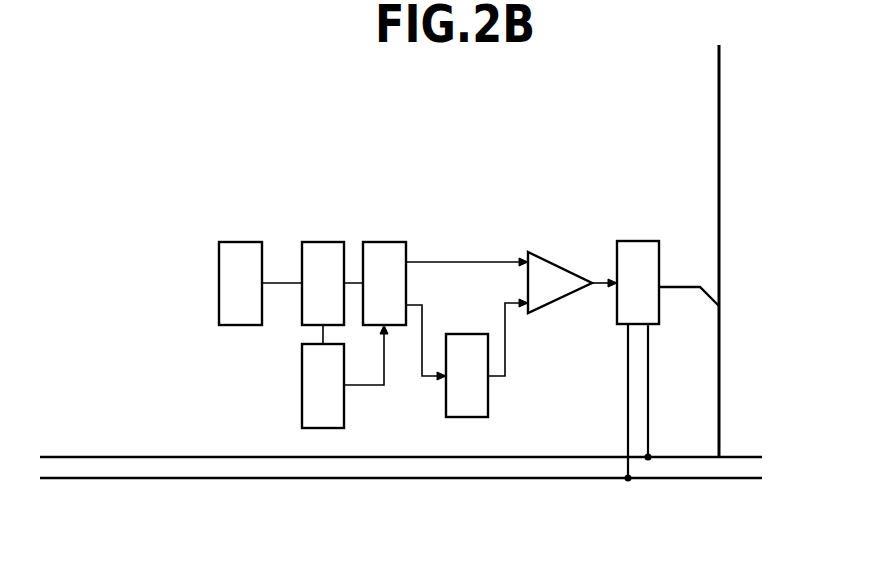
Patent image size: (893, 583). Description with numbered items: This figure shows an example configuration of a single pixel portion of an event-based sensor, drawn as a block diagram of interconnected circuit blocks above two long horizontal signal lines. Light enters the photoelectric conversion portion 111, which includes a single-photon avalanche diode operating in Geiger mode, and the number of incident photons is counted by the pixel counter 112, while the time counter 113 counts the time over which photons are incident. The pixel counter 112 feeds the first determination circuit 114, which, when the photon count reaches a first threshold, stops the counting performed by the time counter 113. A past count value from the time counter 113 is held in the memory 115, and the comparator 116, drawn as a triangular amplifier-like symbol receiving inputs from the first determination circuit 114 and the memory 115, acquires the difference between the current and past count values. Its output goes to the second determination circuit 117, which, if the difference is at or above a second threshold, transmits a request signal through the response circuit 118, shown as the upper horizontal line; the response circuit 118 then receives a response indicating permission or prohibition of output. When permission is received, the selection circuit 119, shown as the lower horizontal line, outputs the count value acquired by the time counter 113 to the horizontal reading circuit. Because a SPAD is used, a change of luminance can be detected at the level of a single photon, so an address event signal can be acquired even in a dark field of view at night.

The photoelectric conversion portion 111 is at (242, 252).
The pixel counter 112 is at (323, 252).
The time counter 113 is at (310, 383).
The first determination circuit 114 is at (385, 252).
The memory 115 is at (478, 402).
The comparator 116 is at (545, 272).
The second determination circuit 117 is at (636, 250).
The response circuit 118 is at (733, 457).
The selection circuit 119 is at (733, 478).